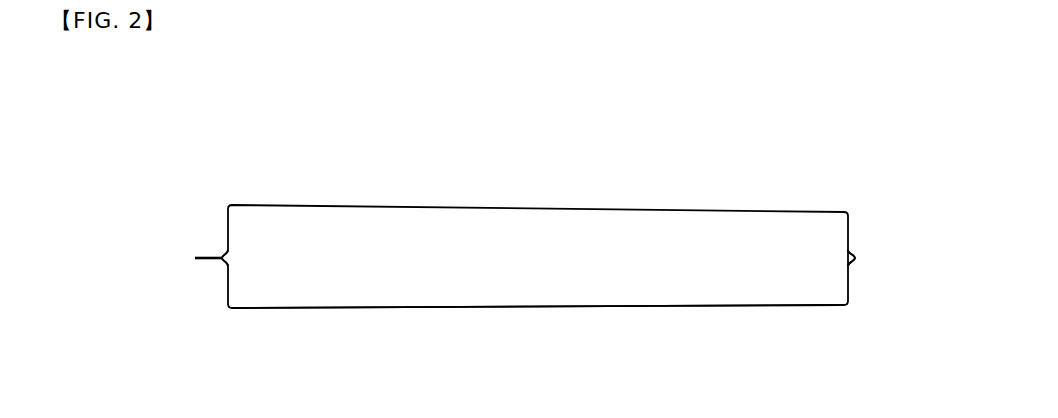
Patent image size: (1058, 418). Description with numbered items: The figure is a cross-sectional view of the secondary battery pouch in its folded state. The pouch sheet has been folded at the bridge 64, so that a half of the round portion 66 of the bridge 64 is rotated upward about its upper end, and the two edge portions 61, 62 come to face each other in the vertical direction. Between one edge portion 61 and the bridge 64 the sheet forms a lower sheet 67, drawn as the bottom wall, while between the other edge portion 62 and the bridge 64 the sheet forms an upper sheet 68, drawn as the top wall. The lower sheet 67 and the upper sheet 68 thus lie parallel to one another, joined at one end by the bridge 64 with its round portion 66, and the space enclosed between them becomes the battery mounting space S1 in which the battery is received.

The edge portion 61 is at (205, 262).
The edge portion 62 is at (208, 257).
The bridge 64 is at (874, 263).
The round portion 66 is at (855, 258).
The lower sheet 67 is at (468, 310).
The upper sheet 68 is at (468, 208).
The battery mounting space S1 is at (588, 262).